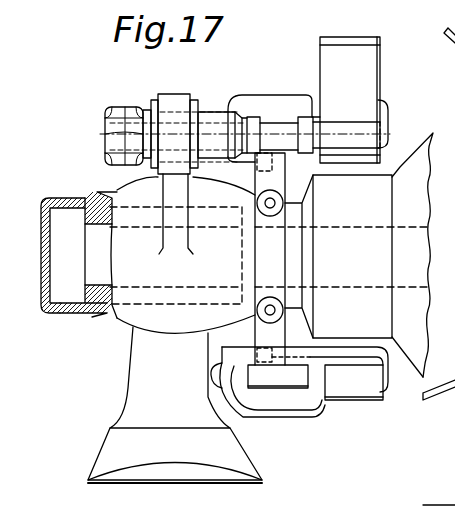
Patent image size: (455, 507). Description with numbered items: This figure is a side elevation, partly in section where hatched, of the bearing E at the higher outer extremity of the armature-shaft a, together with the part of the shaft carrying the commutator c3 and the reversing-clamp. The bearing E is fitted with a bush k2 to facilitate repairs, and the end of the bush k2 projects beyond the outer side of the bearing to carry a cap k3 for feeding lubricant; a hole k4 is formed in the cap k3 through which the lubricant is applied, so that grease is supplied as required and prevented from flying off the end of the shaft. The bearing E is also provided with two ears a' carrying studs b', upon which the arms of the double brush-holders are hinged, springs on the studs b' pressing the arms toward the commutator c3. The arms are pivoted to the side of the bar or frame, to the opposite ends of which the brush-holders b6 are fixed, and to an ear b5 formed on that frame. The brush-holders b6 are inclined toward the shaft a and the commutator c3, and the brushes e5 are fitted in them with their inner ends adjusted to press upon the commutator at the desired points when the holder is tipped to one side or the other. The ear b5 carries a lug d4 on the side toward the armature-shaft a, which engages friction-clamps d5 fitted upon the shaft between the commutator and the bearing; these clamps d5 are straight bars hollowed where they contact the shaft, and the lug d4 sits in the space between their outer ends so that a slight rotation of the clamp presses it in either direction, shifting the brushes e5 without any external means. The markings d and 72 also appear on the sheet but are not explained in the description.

The valve body E is at (175, 328).
The cap k4 is at (62, 197).
The cap bottom wall k3 is at (60, 313).
The cap bore k2 is at (86, 253).
The nut b' is at (181, 248).
The flange a' is at (245, 120).
The pipe sleeve b6 is at (307, 135).
The housing b5 is at (233, 102).
The bar e5 is at (362, 409).
The lug d4 is at (236, 162).
The bracket plate d5 is at (273, 177).
The box c3 is at (354, 178).
The lower portion d is at (353, 292).
The flared member a is at (423, 214).
The sheet mark 72 is at (425, 498).